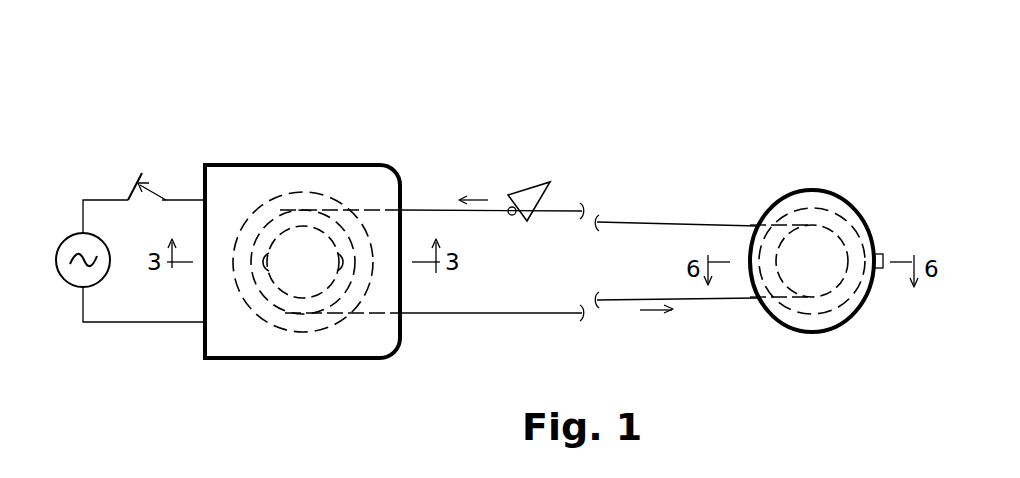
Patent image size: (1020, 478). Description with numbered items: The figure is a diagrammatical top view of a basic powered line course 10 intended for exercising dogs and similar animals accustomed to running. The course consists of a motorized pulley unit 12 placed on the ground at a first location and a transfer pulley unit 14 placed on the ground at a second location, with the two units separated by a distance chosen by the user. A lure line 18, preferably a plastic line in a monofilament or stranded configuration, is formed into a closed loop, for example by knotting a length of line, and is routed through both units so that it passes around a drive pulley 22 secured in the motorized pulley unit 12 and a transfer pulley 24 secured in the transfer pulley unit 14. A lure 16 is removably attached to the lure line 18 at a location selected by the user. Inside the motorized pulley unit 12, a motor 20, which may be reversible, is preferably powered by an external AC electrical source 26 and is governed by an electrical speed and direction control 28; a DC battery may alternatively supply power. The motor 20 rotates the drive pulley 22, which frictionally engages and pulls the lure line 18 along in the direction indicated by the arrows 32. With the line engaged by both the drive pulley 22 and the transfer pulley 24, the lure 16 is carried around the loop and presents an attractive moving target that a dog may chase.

The basic powered line course 10 is at (533, 47).
The motorized pulley unit 12 is at (250, 164).
The transfer pulley unit 14 is at (797, 192).
The lure 16 is at (546, 182).
The lure line 18 is at (467, 313).
The motor 20 is at (288, 293).
The drive pulley 22 is at (323, 190).
The transfer pulley 24 is at (805, 317).
The external AC electrical source 26 is at (61, 243).
The electrical speed and direction control 28 is at (128, 180).
The arrows 32 is at (663, 318).